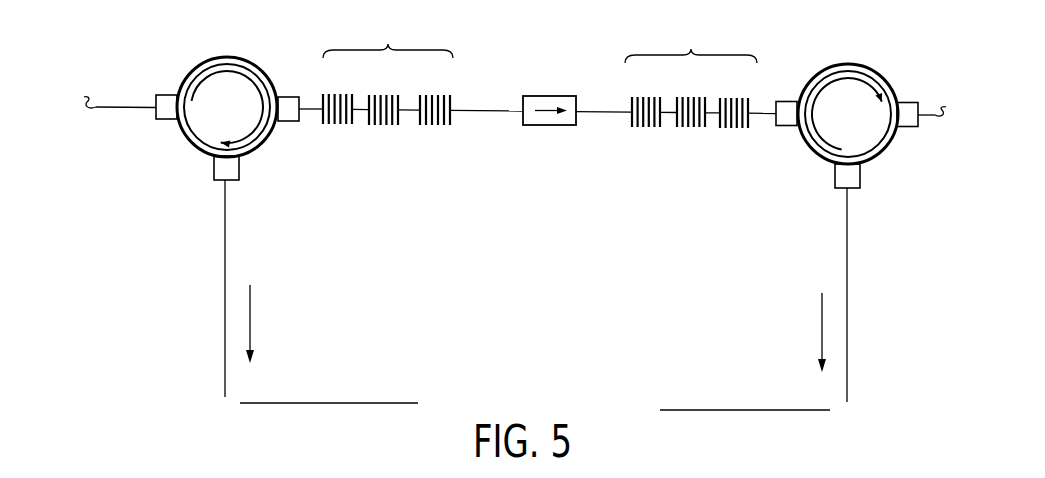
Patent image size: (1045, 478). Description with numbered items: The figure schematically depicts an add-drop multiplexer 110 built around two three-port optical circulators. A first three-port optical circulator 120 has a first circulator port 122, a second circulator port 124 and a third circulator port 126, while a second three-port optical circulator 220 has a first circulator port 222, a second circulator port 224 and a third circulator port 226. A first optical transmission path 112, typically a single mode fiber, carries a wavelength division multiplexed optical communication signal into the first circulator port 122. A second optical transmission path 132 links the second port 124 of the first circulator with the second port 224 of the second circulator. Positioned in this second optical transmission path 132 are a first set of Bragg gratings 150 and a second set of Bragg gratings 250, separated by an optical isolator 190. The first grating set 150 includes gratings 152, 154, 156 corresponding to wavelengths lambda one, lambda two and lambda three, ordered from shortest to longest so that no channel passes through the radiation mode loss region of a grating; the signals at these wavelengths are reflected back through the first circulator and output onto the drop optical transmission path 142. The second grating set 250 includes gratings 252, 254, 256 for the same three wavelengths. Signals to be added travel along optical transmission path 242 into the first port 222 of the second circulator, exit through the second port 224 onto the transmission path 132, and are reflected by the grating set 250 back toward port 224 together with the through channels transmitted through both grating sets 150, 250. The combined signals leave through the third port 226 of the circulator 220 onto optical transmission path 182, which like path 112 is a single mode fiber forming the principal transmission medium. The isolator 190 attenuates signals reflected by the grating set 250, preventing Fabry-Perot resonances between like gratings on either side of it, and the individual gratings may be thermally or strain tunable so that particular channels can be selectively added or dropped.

The add-drop multiplexer 110 is at (531, 260).
The first optical transmission path 112 is at (105, 107).
The first three-port optical circulator 120 is at (223, 57).
The first circulator port 122 is at (168, 95).
The second circulator port 124 is at (289, 97).
The third circulator port 126 is at (214, 167).
The second optical transmission path 132 is at (483, 109).
The drop optical transmission path 142 is at (225, 250).
The first set of Bragg gratings 150 is at (378, 104).
The grating 152 is at (336, 124).
The grating 154 is at (381, 125).
The grating 156 is at (434, 125).
The optical transmission path 182 is at (921, 117).
The optical isolator 190 is at (551, 96).
The second three-port optical circulator 220 is at (850, 64).
The first circulator port 222 is at (836, 189).
The second circulator port 224 is at (785, 101).
The third circulator port 226 is at (909, 102).
The optical transmission path 242 is at (847, 258).
The second set of Bragg gratings 250 is at (685, 103).
The grating 252 is at (736, 128).
The grating 254 is at (690, 128).
The grating 256 is at (645, 128).